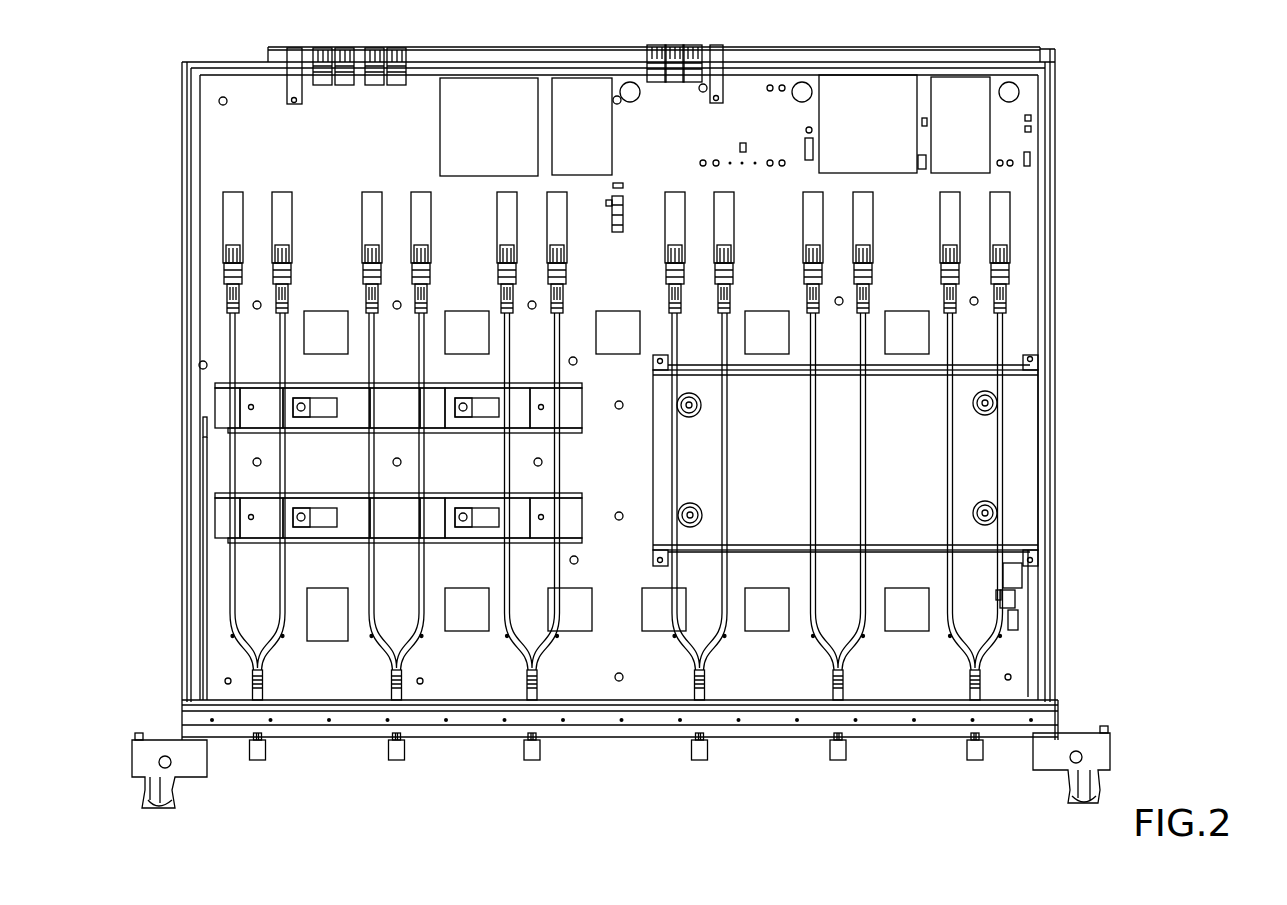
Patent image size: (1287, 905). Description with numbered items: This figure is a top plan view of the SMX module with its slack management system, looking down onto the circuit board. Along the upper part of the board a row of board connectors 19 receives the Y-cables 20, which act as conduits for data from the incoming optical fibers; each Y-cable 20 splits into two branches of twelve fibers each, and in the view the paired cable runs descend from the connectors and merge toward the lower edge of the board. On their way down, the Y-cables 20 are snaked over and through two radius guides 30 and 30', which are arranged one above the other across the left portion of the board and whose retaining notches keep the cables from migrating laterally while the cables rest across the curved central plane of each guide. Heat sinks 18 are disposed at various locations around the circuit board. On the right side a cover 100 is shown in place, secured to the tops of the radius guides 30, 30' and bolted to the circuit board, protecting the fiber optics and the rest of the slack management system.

The heat sink 18 is at (322, 631).
The board connector 19 is at (227, 222).
The Y-cable 20 is at (232, 598).
The radius guide 30 is at (356, 522).
The radius guide 30' is at (359, 408).
The cover 100 is at (834, 471).